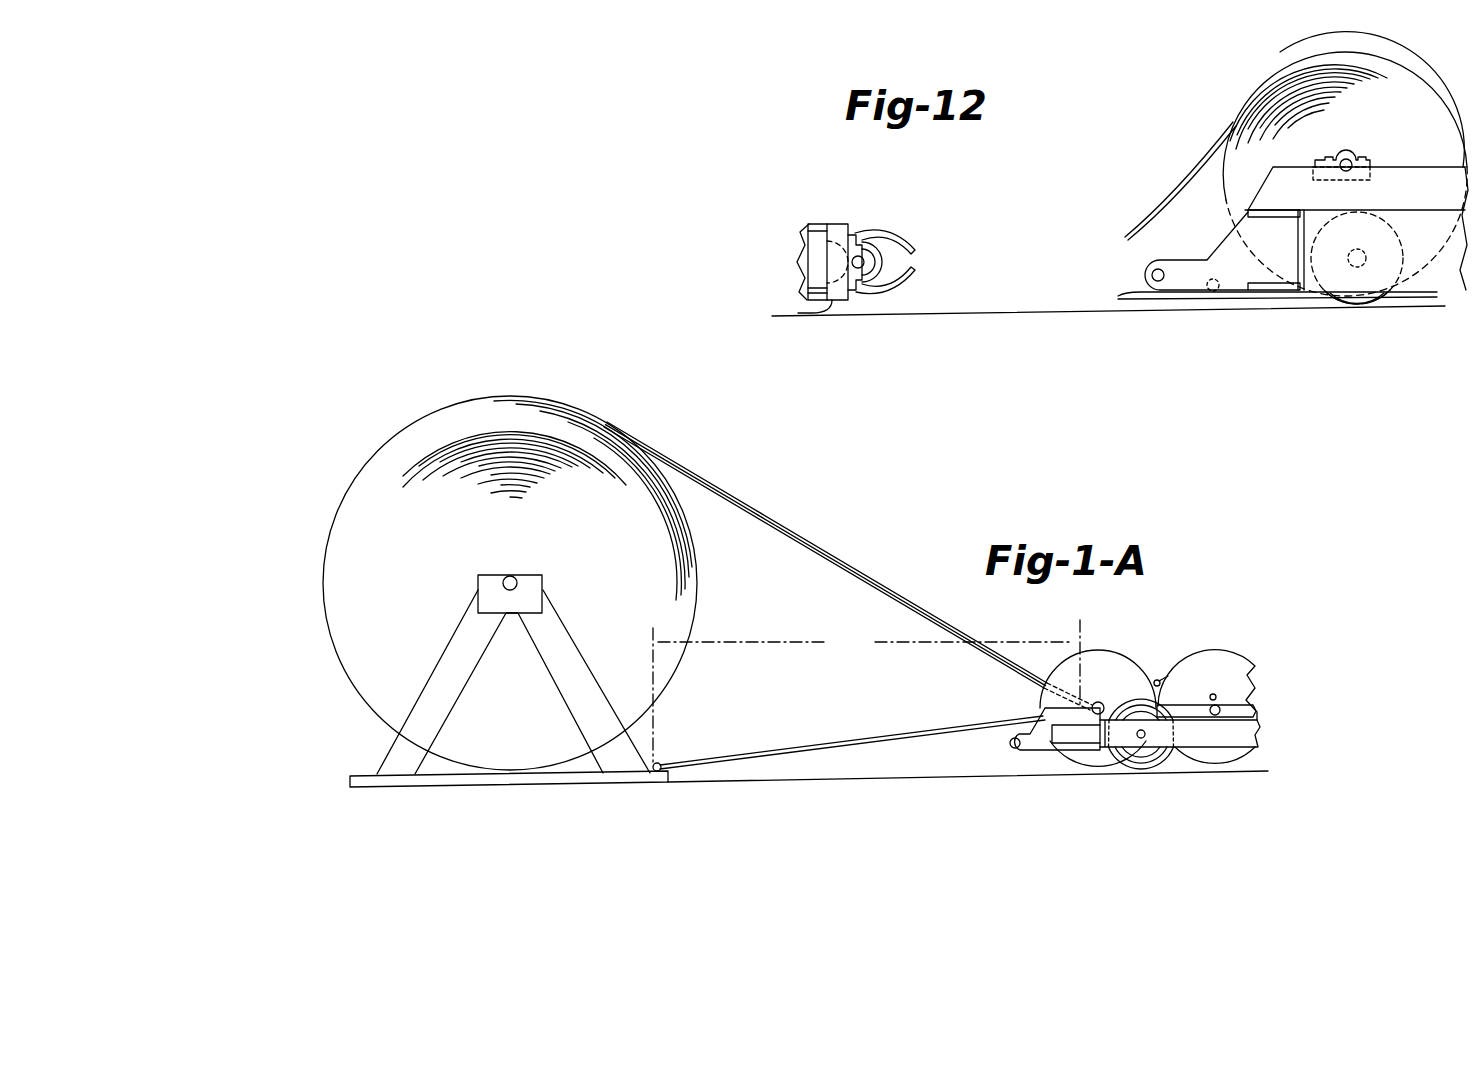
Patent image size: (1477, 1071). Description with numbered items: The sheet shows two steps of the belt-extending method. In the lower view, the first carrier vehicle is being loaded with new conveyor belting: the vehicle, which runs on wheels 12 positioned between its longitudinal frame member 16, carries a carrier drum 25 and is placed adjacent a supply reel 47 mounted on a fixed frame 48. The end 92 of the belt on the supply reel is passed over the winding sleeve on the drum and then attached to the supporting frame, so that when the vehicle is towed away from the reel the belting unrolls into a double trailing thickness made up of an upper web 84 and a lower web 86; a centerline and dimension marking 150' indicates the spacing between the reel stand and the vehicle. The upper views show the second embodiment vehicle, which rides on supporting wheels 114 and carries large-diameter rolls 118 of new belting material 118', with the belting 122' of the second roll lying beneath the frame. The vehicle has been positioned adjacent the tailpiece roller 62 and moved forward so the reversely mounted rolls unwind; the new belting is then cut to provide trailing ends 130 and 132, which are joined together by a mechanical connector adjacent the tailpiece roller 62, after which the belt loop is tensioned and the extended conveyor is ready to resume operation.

In FIG. 12, the roll of new conveyor belting material 118 is at (1345, 164).
In FIG. 12, the new belting material 118' is at (1049, 181).
In FIG. 12, the new belting material 122' is at (1161, 315).
In FIG. 12, the supporting wheels 114 is at (1360, 303).
In FIG. 12, the trailing end 130 is at (912, 243).
In FIG. 12, the tailpiece roller 62 is at (880, 262).
In FIG. 12, the trailing end 132 is at (913, 271).
In FIG. 1-A, the supply reel 47 is at (391, 415).
In FIG. 1-A, the fixed frame 48 is at (570, 656).
In FIG. 1-A, the upper web 84 is at (792, 530).
In FIG. 1-A, the lower web 86 is at (861, 737).
In FIG. 1-A, the end of the belt 92 is at (661, 765).
In FIG. 1-A, the distance / centerline 150' is at (866, 691).
In FIG. 1-A, the carrier drum 25 is at (1118, 660).
In FIG. 1-A, the longitudinal frame member 16 is at (1245, 732).
In FIG. 1-A, the wheels 12 is at (1157, 770).